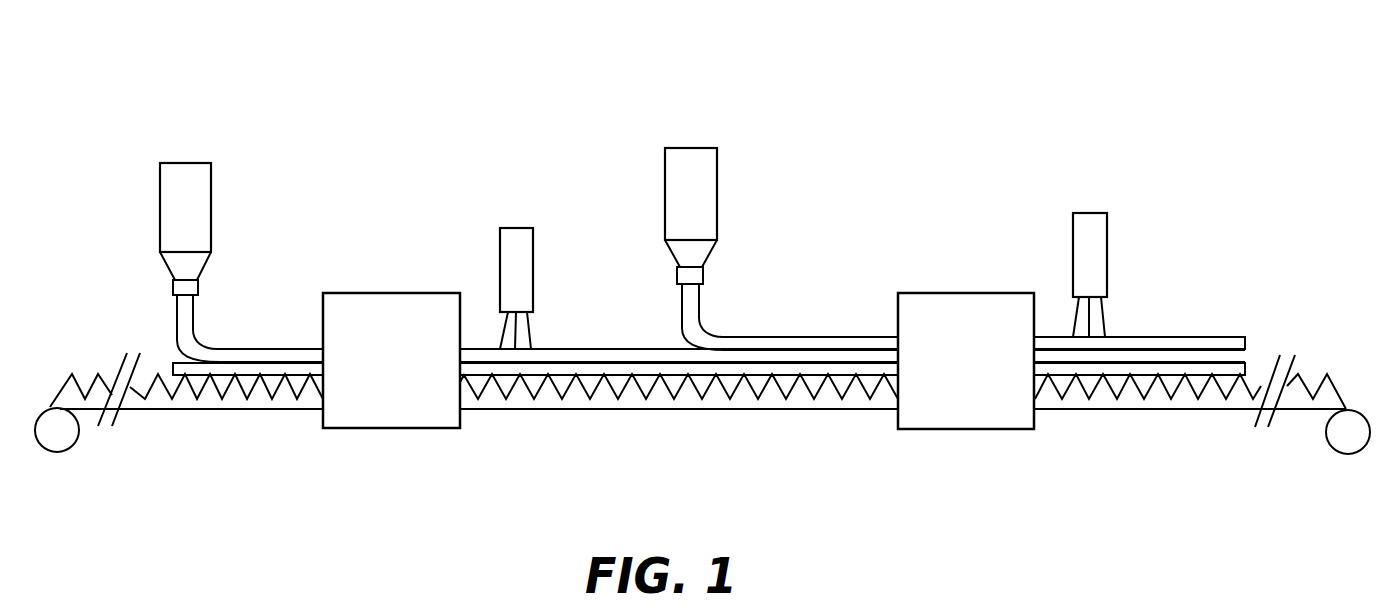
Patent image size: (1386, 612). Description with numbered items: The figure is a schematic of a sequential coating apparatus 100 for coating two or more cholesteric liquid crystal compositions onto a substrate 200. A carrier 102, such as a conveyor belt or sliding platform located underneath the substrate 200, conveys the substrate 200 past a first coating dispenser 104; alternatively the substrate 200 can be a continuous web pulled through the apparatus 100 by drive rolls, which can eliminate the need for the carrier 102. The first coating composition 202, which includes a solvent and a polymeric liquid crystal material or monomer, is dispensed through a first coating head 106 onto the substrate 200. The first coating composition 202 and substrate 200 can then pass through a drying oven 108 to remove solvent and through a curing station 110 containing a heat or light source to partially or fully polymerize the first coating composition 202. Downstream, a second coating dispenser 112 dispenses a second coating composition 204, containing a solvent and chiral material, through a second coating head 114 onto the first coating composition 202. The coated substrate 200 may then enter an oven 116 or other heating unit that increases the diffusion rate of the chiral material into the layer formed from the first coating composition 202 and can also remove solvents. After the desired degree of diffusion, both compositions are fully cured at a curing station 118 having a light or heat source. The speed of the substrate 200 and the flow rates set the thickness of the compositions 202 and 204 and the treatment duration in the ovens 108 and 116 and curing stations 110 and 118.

The sequential coating apparatus 100 is at (365, 128).
The carrier 102 is at (522, 400).
The first coating dispenser 104 is at (203, 202).
The first coating head 106 is at (196, 291).
The drying oven 108 is at (373, 405).
The curing station 110 is at (510, 252).
The second coating dispenser 112 is at (708, 190).
The second coating head 114 is at (701, 277).
The oven 116 is at (943, 405).
The curing station 118 is at (1082, 238).
The substrate 200 is at (177, 368).
The first coating composition 202 is at (250, 352).
The second coating composition 204 is at (754, 341).